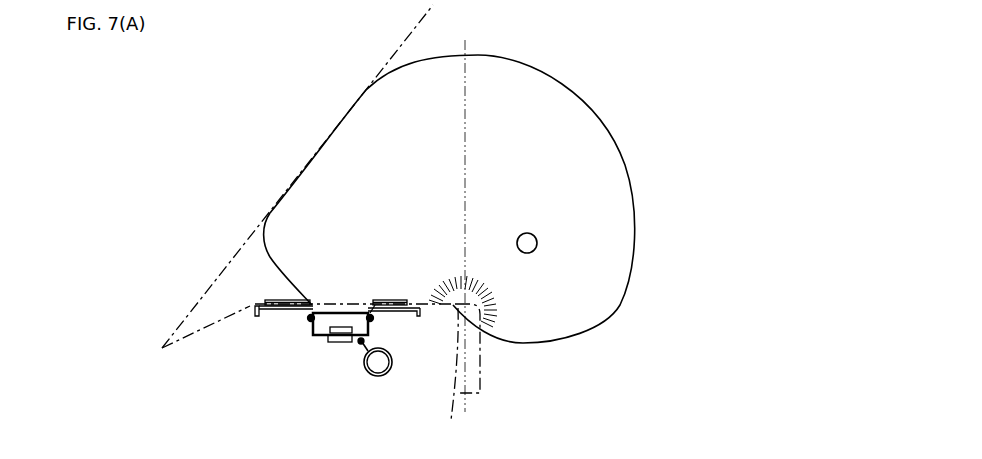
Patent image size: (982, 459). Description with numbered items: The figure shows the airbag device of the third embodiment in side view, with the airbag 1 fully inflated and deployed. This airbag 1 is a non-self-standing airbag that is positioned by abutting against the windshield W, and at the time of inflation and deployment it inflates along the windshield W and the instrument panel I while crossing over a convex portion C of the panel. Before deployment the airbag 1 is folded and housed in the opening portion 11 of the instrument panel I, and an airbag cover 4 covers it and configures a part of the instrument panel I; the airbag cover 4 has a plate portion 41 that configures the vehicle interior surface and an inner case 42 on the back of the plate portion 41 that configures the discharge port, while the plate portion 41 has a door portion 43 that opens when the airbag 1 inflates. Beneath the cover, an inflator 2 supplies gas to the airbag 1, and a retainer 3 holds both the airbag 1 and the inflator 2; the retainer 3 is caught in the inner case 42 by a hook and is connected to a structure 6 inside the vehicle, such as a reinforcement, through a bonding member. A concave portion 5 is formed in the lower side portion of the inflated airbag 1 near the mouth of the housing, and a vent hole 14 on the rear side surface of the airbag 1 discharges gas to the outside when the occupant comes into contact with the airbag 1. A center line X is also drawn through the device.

The airbag 1 is at (518, 58).
The inflator 2 is at (340, 345).
The retainer 3 is at (317, 338).
The airbag cover 4 is at (258, 320).
The concave portion 5 is at (496, 285).
The structure 6 is at (376, 377).
The opening portion 11 is at (343, 305).
The vent hole 14 is at (540, 243).
The plate portion 41 is at (283, 311).
The inner case 42 is at (309, 321).
The door portion 43 is at (272, 299).
The windshield W is at (387, 62).
The center axis X is at (466, 227).
The instrument panel I is at (456, 353).
The convex portion C is at (483, 381).